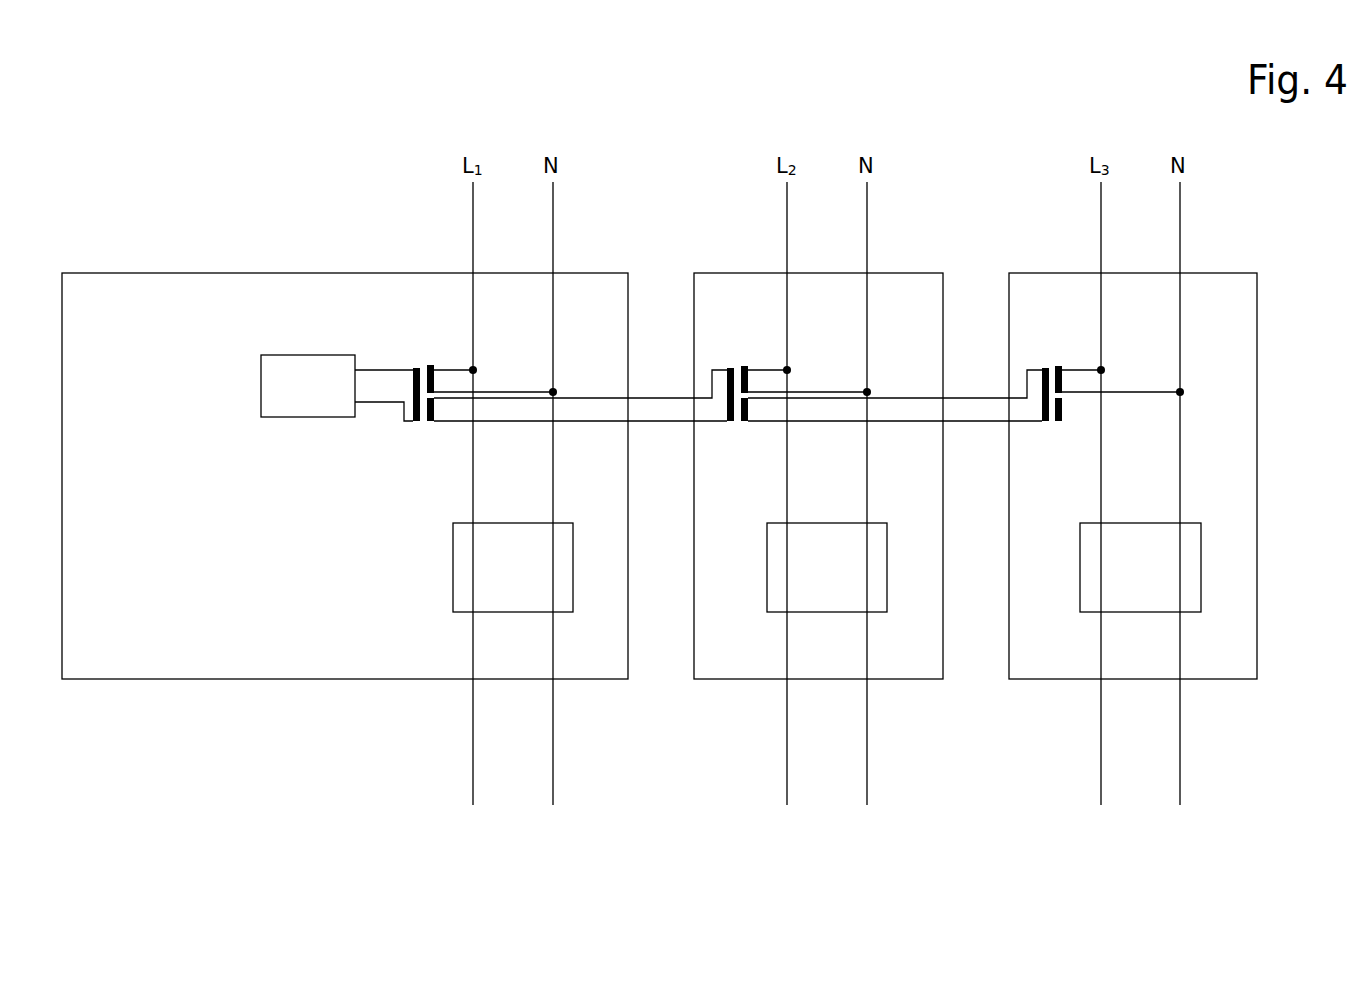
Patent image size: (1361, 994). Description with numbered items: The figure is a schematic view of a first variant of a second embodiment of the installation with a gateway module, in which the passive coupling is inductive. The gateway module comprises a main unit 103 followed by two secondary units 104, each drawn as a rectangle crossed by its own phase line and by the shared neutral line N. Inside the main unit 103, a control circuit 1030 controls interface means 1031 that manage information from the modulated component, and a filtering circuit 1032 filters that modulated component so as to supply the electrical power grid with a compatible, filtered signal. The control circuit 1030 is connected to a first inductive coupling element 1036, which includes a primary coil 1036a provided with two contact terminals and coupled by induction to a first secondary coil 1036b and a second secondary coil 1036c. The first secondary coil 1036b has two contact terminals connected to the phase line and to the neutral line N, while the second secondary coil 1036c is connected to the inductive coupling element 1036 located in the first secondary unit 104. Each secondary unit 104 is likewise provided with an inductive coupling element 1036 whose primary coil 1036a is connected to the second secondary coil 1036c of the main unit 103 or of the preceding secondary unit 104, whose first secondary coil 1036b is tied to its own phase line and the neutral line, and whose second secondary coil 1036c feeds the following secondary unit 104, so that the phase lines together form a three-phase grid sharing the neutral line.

The main unit 103 is at (242, 272).
The secondary unit 104 is at (919, 272).
The control circuit 1030 is at (337, 388).
The interface means 1031 is at (421, 363).
The filtering circuit 1032 is at (437, 588).
The inductive coupling element 1036 is at (421, 398).
The primary coil 1036a is at (410, 436).
The first secondary coil 1036b is at (444, 355).
The second secondary coil 1036c is at (436, 438).